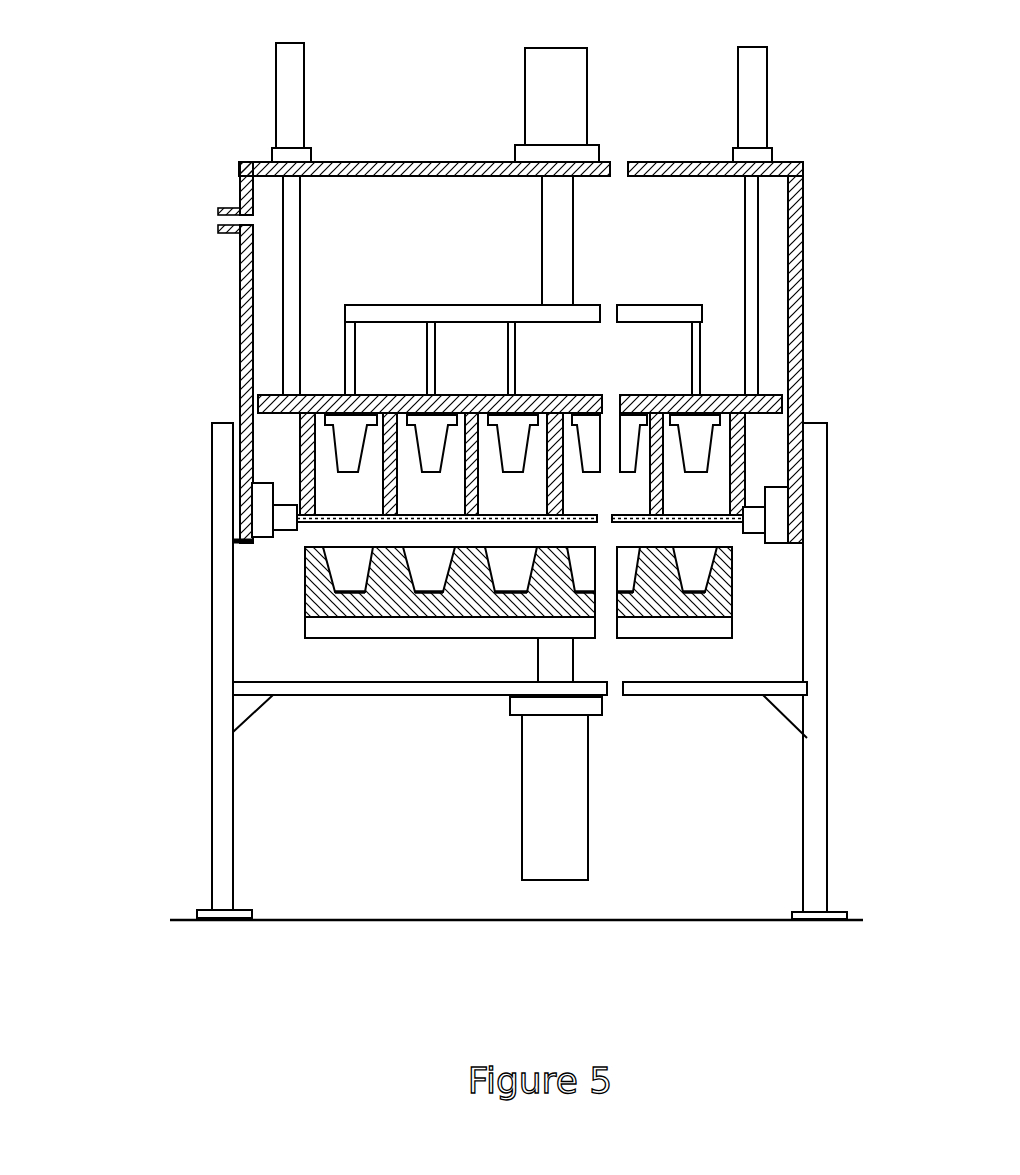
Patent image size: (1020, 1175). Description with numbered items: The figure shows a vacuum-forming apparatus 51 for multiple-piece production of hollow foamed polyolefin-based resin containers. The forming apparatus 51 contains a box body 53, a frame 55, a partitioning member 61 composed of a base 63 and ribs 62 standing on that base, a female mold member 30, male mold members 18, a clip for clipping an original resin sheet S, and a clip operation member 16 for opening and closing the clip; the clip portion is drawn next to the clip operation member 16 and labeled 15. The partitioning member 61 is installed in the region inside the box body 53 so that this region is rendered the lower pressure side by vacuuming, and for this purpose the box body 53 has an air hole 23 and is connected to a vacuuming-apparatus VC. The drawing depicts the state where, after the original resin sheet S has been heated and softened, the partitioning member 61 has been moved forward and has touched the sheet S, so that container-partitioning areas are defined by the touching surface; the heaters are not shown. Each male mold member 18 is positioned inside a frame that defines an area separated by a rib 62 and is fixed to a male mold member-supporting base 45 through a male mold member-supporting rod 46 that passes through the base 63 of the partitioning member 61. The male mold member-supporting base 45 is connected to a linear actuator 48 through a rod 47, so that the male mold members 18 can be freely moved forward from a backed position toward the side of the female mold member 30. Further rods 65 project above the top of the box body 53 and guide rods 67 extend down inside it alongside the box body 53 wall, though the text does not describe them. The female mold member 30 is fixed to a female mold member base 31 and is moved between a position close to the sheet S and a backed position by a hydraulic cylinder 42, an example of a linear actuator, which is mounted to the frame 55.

The forming apparatus 51 is at (818, 132).
The box body 53 is at (800, 307).
The air hole 23 is at (220, 208).
The vacuuming-apparatus VC is at (210, 218).
The guide rods 65 is at (298, 77).
The linear actuator 48 is at (572, 100).
The rod 47 is at (562, 219).
The support rods 67 is at (300, 280).
The male mold member-supporting base 45 is at (416, 305).
The male mold member-supporting rod 46 is at (355, 337).
The partitioning member 61 is at (122, 380).
The base 63 is at (277, 394).
The rib 62 is at (298, 457).
The male mold member 18 is at (358, 455).
The original resin sheet S is at (320, 522).
The sheet clamp bracket 15 is at (282, 530).
The clip operation member 16 is at (260, 507).
The female mold member 30 is at (483, 613).
The female mold member base 31 is at (325, 634).
The frame 55 is at (730, 695).
The hydraulic cylinder 42 is at (522, 795).